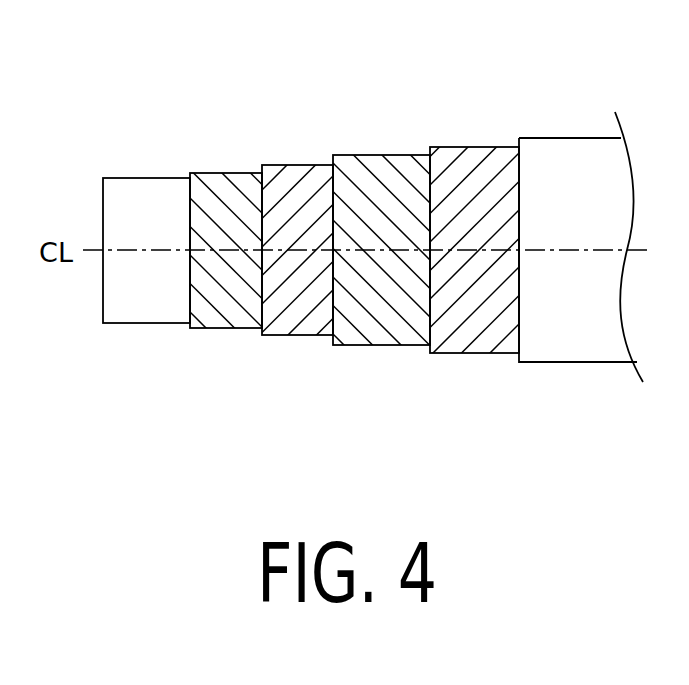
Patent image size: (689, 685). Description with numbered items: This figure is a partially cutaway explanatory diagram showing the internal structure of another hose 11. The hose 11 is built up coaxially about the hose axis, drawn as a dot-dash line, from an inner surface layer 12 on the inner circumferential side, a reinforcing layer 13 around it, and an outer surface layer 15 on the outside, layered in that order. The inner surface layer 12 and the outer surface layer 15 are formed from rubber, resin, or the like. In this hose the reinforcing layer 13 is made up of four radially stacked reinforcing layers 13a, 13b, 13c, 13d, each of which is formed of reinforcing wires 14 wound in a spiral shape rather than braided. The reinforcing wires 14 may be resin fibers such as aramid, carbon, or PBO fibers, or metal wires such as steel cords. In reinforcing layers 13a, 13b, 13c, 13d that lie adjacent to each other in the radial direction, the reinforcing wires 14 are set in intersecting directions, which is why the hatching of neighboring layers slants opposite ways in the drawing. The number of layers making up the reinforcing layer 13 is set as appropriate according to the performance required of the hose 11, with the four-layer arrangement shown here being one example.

The hose 11 is at (582, 118).
The inner surface layer 12 is at (155, 337).
The reinforcing layer 13 is at (354, 276).
The reinforcing layer 13a is at (238, 342).
The reinforcing layer 13b is at (309, 350).
The reinforcing layer 13c is at (389, 357).
The reinforcing layer 13d is at (473, 365).
The reinforcing wires 14 is at (198, 240).
The outer surface layer 15 is at (572, 359).